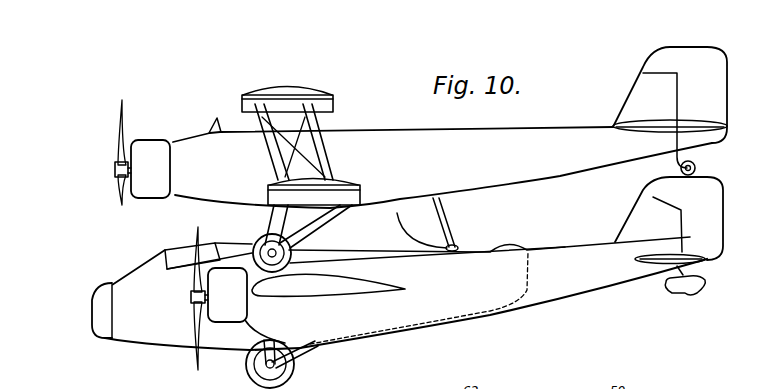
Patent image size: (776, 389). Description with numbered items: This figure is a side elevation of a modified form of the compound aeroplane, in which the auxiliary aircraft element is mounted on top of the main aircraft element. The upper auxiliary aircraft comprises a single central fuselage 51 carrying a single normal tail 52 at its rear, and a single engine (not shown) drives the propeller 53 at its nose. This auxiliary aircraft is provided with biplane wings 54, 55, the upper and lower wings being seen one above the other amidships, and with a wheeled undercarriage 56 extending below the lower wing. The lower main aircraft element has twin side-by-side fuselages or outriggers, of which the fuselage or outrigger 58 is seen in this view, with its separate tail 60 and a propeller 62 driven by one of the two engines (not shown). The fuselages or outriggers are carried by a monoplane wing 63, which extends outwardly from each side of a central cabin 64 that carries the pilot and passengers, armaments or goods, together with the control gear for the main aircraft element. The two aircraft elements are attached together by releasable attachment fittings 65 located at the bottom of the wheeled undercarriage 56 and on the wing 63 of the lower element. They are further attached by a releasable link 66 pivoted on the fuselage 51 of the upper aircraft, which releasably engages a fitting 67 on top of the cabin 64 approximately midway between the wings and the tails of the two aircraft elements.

The central fuselage 51 is at (372, 133).
The tail 52 is at (710, 108).
The propeller 53 is at (120, 145).
The biplane wing 54 is at (305, 92).
The biplane wing 55 is at (343, 198).
The wheeled undercarriage 56 is at (305, 229).
The fuselage or outrigger 58 is at (545, 295).
The tail 60 is at (705, 227).
The propeller 62 is at (197, 340).
The monoplane wing 63 is at (355, 279).
The central cabin 64 is at (165, 259).
The releasable attachment fitting 65 is at (254, 246).
The releasable link 66 is at (450, 214).
The fitting 67 is at (462, 245).